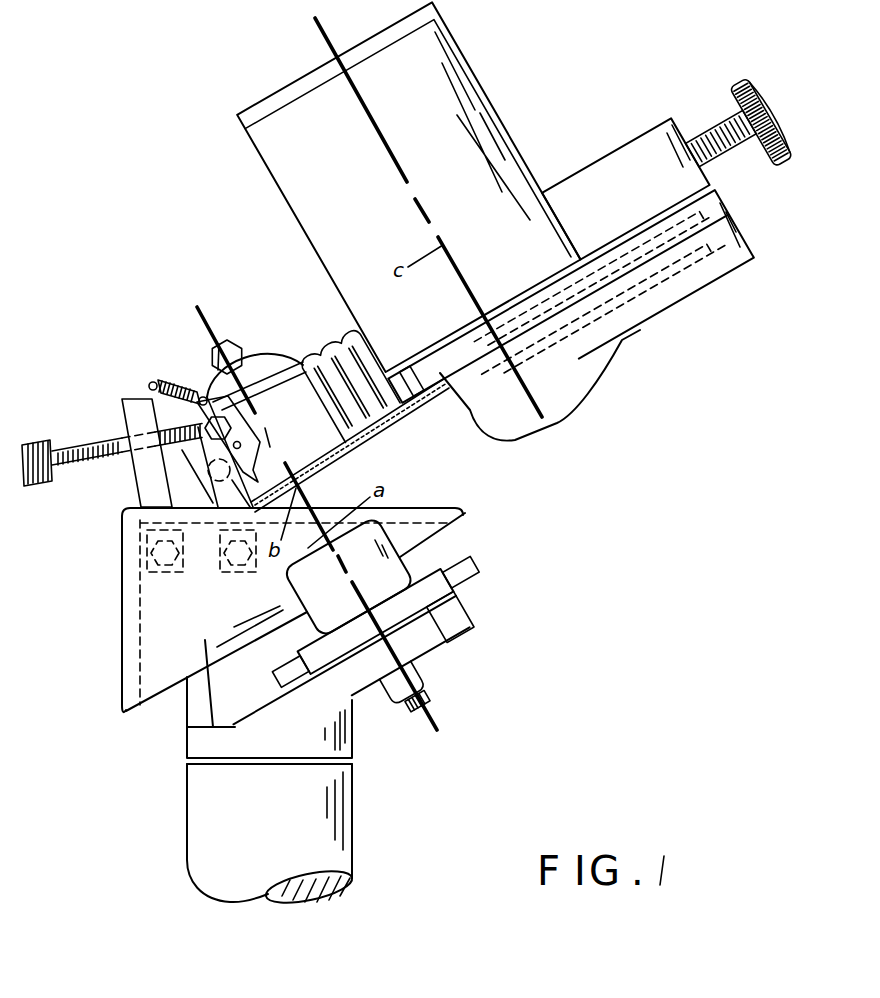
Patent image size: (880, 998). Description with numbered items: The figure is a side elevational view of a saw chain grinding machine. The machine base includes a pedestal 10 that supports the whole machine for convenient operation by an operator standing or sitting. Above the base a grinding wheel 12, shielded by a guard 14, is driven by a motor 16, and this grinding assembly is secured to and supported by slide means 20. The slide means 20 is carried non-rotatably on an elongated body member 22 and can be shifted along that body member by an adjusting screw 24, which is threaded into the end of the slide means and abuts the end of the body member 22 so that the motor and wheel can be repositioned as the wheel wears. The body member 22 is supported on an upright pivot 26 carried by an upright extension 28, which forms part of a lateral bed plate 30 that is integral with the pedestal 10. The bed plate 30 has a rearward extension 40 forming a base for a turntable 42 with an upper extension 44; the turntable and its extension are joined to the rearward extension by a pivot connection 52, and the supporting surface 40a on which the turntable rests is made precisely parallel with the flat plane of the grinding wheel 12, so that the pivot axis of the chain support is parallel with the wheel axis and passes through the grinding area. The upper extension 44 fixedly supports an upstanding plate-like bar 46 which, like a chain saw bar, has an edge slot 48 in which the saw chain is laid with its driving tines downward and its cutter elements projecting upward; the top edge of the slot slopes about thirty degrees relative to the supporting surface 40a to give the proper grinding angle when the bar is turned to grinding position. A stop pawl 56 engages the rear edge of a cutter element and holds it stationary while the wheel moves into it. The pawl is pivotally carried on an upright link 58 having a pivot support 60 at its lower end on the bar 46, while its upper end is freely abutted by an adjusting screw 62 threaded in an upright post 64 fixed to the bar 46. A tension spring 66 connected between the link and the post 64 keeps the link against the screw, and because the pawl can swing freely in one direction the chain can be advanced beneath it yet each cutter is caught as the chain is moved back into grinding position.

The pedestal 10 is at (190, 838).
The grinding wheel 12 is at (430, 417).
The guard 14 is at (690, 273).
The motor 16 is at (453, 53).
The slide means 20 is at (613, 157).
The elongated body member 22 is at (283, 388).
The adjusting screw 24 is at (765, 102).
The upright pivot 26 is at (217, 350).
The upright extension 28 is at (253, 368).
The lateral bed plate 30 is at (190, 745).
The rearward extension 40 is at (470, 626).
The supporting surface 40a is at (450, 643).
The turntable 42 is at (453, 591).
The upper extension 44 is at (370, 558).
The bar 46 is at (148, 662).
The edge slot 48 is at (142, 597).
The pivot connection 52 is at (413, 718).
The stop pawl 56 is at (262, 463).
The upright link 58 is at (220, 515).
The pivot support 60 is at (238, 562).
The adjusting screw 62 is at (70, 463).
The upright post 64 is at (126, 399).
The tension spring 66 is at (170, 385).